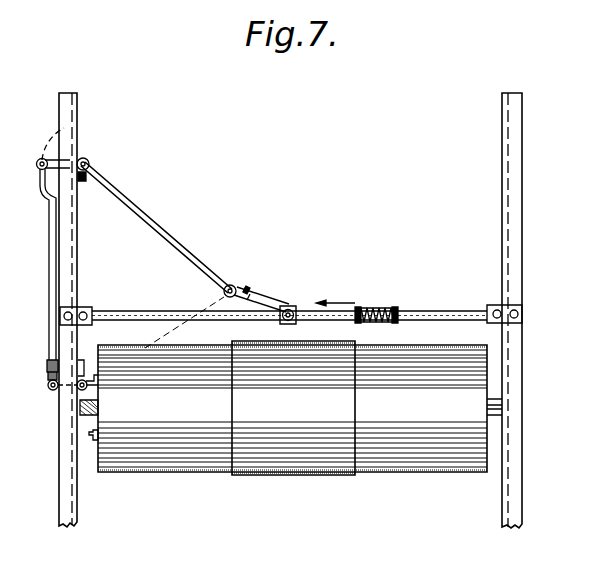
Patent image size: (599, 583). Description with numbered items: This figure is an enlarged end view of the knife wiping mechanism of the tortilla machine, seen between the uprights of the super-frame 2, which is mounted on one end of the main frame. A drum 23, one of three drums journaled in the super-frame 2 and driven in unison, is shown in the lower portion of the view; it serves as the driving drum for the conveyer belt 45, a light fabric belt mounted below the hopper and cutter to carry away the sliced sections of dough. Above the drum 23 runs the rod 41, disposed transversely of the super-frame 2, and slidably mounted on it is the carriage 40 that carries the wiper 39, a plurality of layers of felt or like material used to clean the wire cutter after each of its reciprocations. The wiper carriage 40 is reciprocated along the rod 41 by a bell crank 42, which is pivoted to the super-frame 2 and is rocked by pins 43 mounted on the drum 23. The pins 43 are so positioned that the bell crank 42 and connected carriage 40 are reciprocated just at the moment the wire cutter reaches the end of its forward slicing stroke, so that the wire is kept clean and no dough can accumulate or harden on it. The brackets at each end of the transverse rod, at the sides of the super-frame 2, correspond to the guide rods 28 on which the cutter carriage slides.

The super-frame 2 is at (513, 197).
The drum 23 is at (447, 474).
The guide rods 28 is at (88, 308).
The wiper 39 is at (372, 310).
The carriage 40 is at (333, 322).
The rod 41 is at (258, 318).
The bell crank 42 is at (178, 249).
The pins 43 is at (93, 436).
The conveyer belt 45 is at (312, 477).